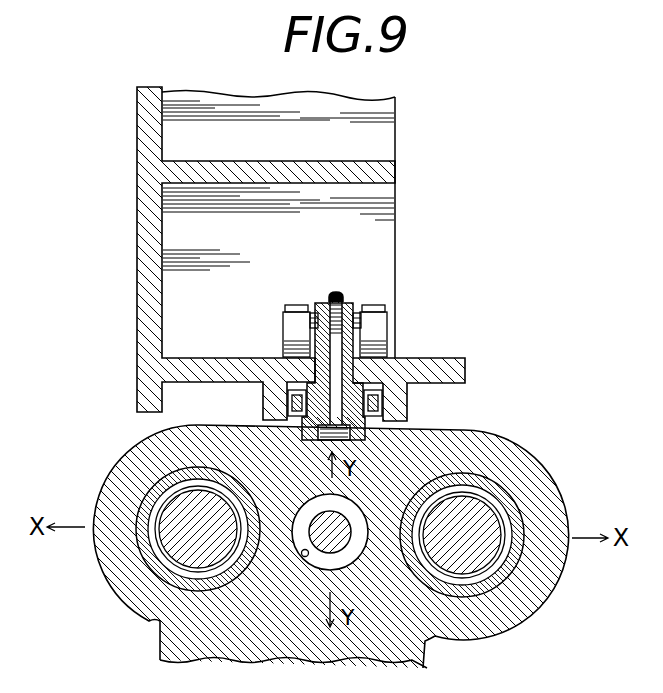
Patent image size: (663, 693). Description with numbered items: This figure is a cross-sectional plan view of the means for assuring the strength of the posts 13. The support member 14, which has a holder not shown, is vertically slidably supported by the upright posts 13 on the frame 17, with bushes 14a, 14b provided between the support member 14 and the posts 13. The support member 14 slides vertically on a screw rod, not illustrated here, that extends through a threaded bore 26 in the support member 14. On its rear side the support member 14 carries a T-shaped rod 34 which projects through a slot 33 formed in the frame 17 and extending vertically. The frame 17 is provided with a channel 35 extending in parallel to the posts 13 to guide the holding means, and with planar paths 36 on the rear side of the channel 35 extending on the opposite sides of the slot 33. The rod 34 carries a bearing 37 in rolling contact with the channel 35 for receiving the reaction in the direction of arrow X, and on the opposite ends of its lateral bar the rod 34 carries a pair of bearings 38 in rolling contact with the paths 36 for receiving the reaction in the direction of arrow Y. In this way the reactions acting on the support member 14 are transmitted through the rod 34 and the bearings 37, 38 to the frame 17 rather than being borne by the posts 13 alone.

The posts 13 is at (187, 541).
The support member 14 is at (500, 443).
The bush 14a is at (429, 582).
The bush 14b is at (407, 553).
The frame 17 is at (139, 209).
The threaded bore 26 is at (303, 558).
The slot 33 is at (388, 365).
The T-shaped rod 34 is at (334, 292).
The channel 35 is at (407, 399).
The planar paths 36 is at (297, 350).
The bearing 37 is at (288, 404).
The bearings 38 is at (292, 305).